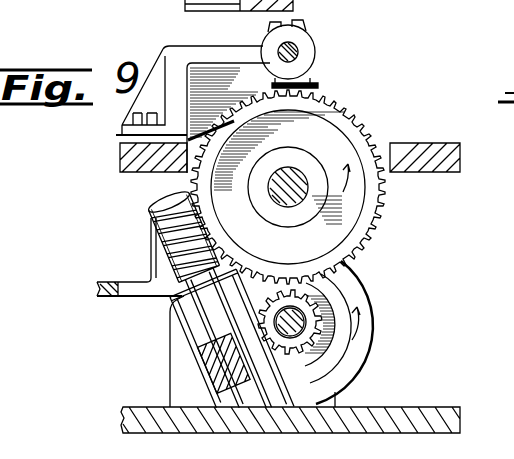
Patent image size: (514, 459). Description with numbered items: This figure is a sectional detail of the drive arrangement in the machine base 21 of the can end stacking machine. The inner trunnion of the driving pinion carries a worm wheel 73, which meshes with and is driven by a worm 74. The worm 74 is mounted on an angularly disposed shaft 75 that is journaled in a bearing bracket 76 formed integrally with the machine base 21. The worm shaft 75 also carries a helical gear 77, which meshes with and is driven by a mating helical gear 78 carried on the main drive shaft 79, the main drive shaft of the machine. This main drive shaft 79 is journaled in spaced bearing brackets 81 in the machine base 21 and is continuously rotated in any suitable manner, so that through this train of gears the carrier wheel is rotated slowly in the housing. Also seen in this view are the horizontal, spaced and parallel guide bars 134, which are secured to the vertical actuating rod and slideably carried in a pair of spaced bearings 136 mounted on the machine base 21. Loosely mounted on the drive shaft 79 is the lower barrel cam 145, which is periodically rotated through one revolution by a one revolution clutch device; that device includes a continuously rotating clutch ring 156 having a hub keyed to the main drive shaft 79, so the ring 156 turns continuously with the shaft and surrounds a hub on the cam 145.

The machine base 21 is at (462, 163).
The worm wheel 73 is at (373, 208).
The worm 74 is at (163, 247).
The shaft 75 is at (162, 203).
The bearing bracket 76 is at (176, 338).
The helical gear 77 is at (205, 358).
The helical gear 78 is at (333, 322).
The main drive shaft 79 is at (322, 303).
The bearing brackets 81 is at (326, 399).
The guide bars 134 is at (298, 50).
The bearings 136 is at (213, 58).
The barrel cam 145 is at (347, 362).
The clutch ring 156 is at (325, 296).